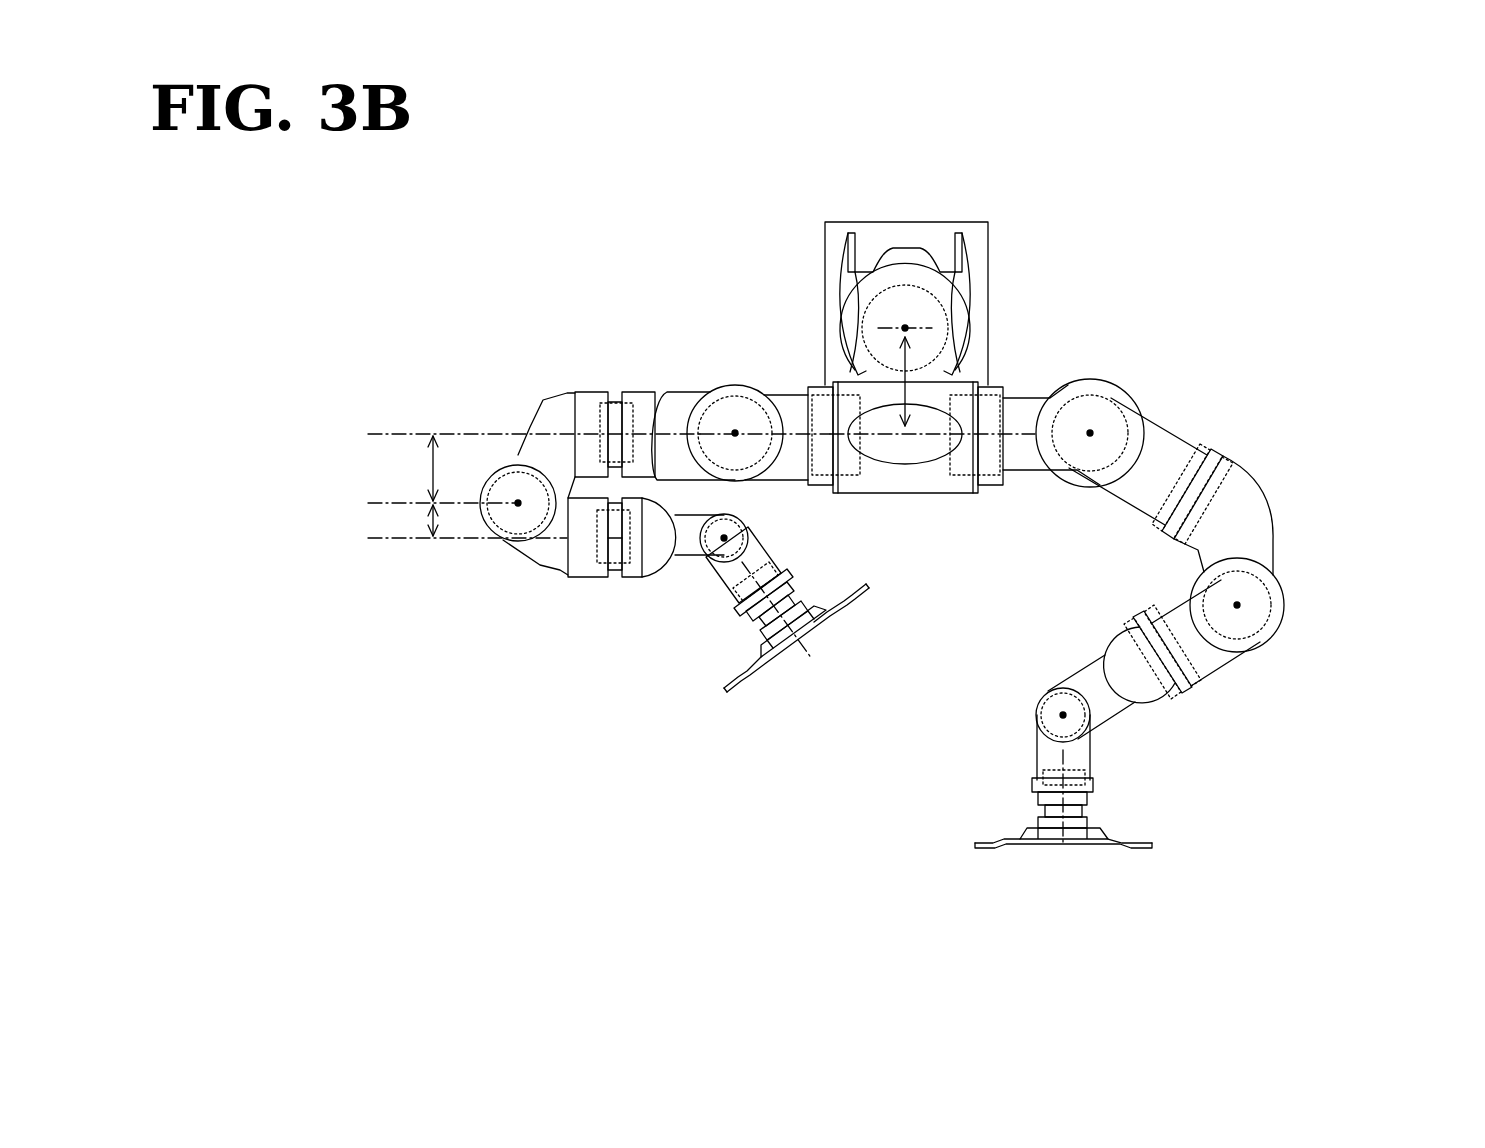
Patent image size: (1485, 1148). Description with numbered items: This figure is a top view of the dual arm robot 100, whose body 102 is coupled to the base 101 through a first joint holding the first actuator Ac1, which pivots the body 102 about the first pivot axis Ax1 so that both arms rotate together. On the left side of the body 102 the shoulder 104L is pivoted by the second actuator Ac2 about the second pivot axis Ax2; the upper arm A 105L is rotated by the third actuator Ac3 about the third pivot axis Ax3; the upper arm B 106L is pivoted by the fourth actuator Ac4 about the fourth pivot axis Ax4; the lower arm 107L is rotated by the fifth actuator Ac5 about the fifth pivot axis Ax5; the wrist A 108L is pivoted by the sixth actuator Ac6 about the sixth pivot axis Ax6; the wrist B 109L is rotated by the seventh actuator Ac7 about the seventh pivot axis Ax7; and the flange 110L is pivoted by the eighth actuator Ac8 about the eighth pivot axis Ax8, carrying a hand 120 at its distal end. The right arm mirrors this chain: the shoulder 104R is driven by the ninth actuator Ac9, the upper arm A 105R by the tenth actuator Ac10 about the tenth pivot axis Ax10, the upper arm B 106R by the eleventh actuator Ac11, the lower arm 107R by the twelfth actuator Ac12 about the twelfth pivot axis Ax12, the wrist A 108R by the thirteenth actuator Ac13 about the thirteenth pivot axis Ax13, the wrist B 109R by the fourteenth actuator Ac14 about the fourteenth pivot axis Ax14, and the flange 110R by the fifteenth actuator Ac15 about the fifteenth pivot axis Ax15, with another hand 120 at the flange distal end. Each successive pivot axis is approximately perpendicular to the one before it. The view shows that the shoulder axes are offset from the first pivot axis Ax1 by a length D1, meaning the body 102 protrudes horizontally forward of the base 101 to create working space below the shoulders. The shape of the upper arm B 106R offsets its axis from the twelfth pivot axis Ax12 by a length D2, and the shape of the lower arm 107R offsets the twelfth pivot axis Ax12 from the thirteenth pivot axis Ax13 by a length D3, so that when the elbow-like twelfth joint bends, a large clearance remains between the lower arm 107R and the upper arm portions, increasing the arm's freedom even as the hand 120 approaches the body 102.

The robot 100 is at (810, 205).
The base 101 is at (905, 272).
The body 102 is at (842, 328).
The shoulder 104R is at (772, 395).
The upper arm A 105R is at (707, 390).
The upper arm B 106R is at (533, 400).
The lower arm 107R is at (548, 578).
The wrist A 108R is at (640, 578).
The wrist B 109R is at (772, 553).
The flange 110R is at (792, 577).
The shoulder 104L is at (1122, 387).
The upper arm A 105L is at (1190, 422).
The upper arm B 106L is at (1276, 494).
The lower arm 107L is at (1282, 660).
The wrist A 108L is at (1103, 718).
The wrist B 109L is at (1035, 752).
The flange 110L is at (1032, 785).
The hand 120 is at (742, 720).
The first actuator Ac1 is at (940, 300).
The second actuator Ac2 is at (992, 388).
The third actuator Ac3 is at (1078, 396).
The fourth actuator Ac4 is at (1225, 460).
The fifth actuator Ac5 is at (1272, 612).
The sixth actuator Ac6 is at (1200, 700).
The seventh actuator Ac7 is at (1047, 694).
The eighth actuator Ac8 is at (1093, 792).
The ninth actuator Ac9 is at (808, 390).
The tenth actuator Ac10 is at (735, 396).
The eleventh actuator Ac11 is at (603, 403).
The twelfth actuator Ac12 is at (497, 543).
The thirteenth actuator Ac13 is at (598, 600).
The fourteenth actuator Ac14 is at (746, 517).
The fifteenth actuator Ac15 is at (740, 617).
The first pivot axis Ax1 is at (908, 330).
The second pivot axis Ax2 is at (626, 438).
The third pivot axis Ax3 is at (1090, 433).
The fourth pivot axis Ax4 is at (1150, 469).
The fifth pivot axis Ax5 is at (1237, 605).
The sixth pivot axis Ax6 is at (1152, 658).
The seventh pivot axis Ax7 is at (1063, 715).
The eighth pivot axis Ax8 is at (1063, 845).
The tenth pivot axis Ax10 is at (735, 433).
The twelfth pivot axis Ax12 is at (431, 503).
The thirteenth pivot axis Ax13 is at (464, 541).
The fourteenth pivot axis Ax14 is at (724, 538).
The fifteenth pivot axis Ax15 is at (812, 665).
The length D1 is at (921, 381).
The length D2 is at (450, 468).
The length D3 is at (450, 521).